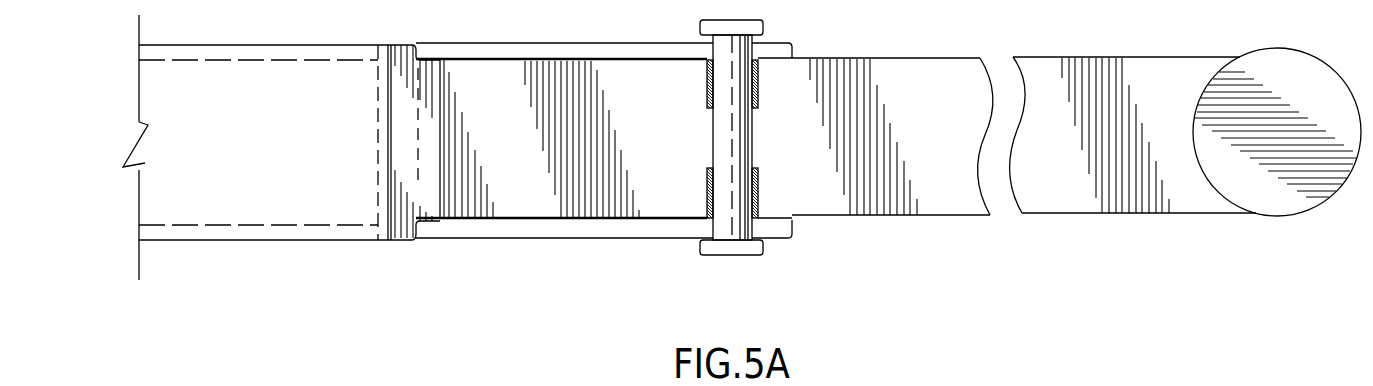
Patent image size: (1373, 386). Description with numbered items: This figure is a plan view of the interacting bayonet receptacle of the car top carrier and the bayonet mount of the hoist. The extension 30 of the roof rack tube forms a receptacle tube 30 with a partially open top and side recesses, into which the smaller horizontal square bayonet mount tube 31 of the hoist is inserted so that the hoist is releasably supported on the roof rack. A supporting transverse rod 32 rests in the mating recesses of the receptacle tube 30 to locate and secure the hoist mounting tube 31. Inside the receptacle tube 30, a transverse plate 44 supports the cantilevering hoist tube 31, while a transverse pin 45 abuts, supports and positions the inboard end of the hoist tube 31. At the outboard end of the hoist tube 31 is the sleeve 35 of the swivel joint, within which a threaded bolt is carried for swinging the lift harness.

The extension 30 is at (242, 241).
The transverse plate 44 is at (425, 145).
The transverse pin 45 is at (395, 241).
The bayonet mount tube 31 is at (900, 217).
The transverse rod 32 is at (743, 256).
The sleeve 35 is at (1210, 192).